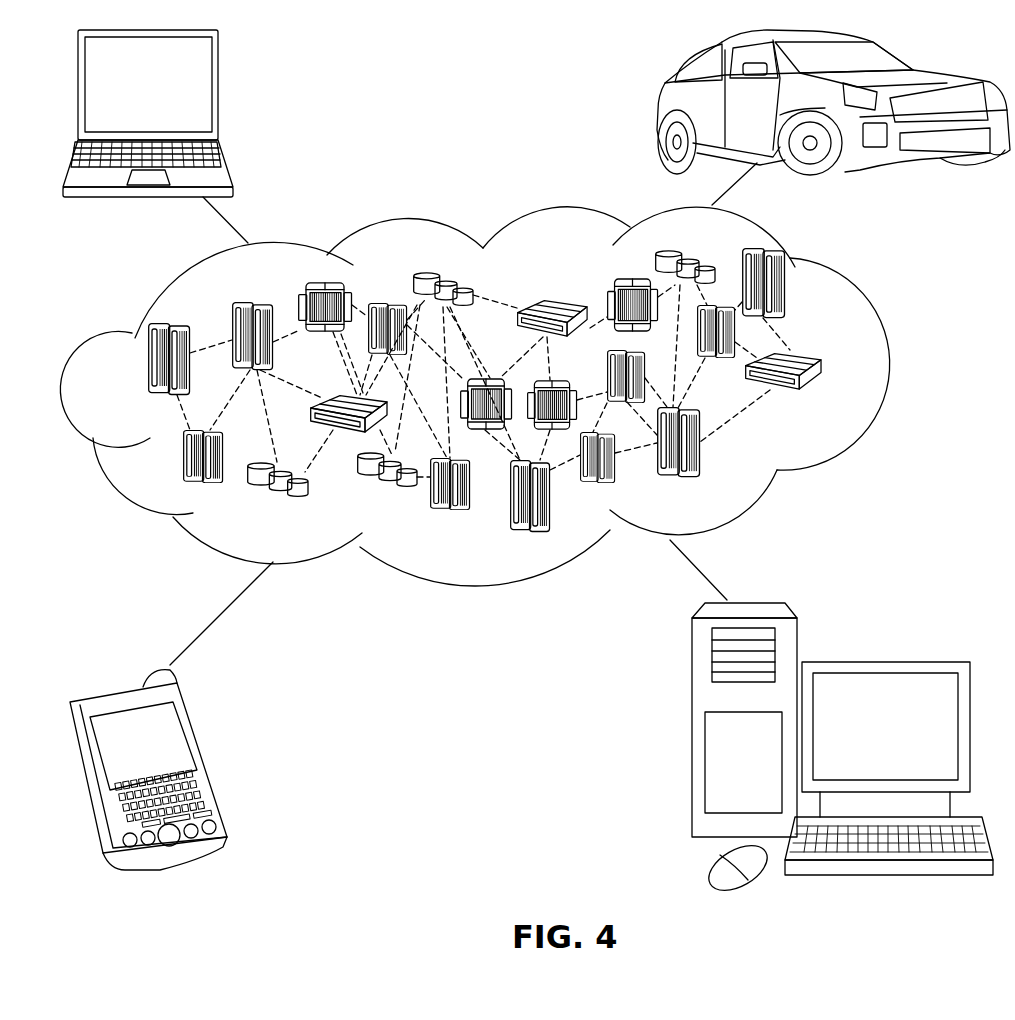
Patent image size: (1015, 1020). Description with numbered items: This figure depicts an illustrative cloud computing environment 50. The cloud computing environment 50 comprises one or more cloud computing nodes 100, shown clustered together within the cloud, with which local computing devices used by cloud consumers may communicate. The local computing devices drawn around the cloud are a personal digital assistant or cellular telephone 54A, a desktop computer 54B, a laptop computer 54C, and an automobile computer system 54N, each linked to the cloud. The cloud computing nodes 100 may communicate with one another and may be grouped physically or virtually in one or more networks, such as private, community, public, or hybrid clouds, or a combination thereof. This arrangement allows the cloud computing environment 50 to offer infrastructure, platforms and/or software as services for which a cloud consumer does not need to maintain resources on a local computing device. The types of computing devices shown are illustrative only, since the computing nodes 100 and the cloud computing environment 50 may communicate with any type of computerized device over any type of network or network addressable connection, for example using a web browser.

The cloud computing environment 50 is at (880, 368).
The cloud computing nodes 100 is at (834, 403).
The personal digital assistant (PDA) or cellular telephone 54A is at (207, 757).
The desktop computer 54B is at (882, 662).
The laptop computer 54C is at (220, 92).
The automobile computer system 54N is at (660, 110).